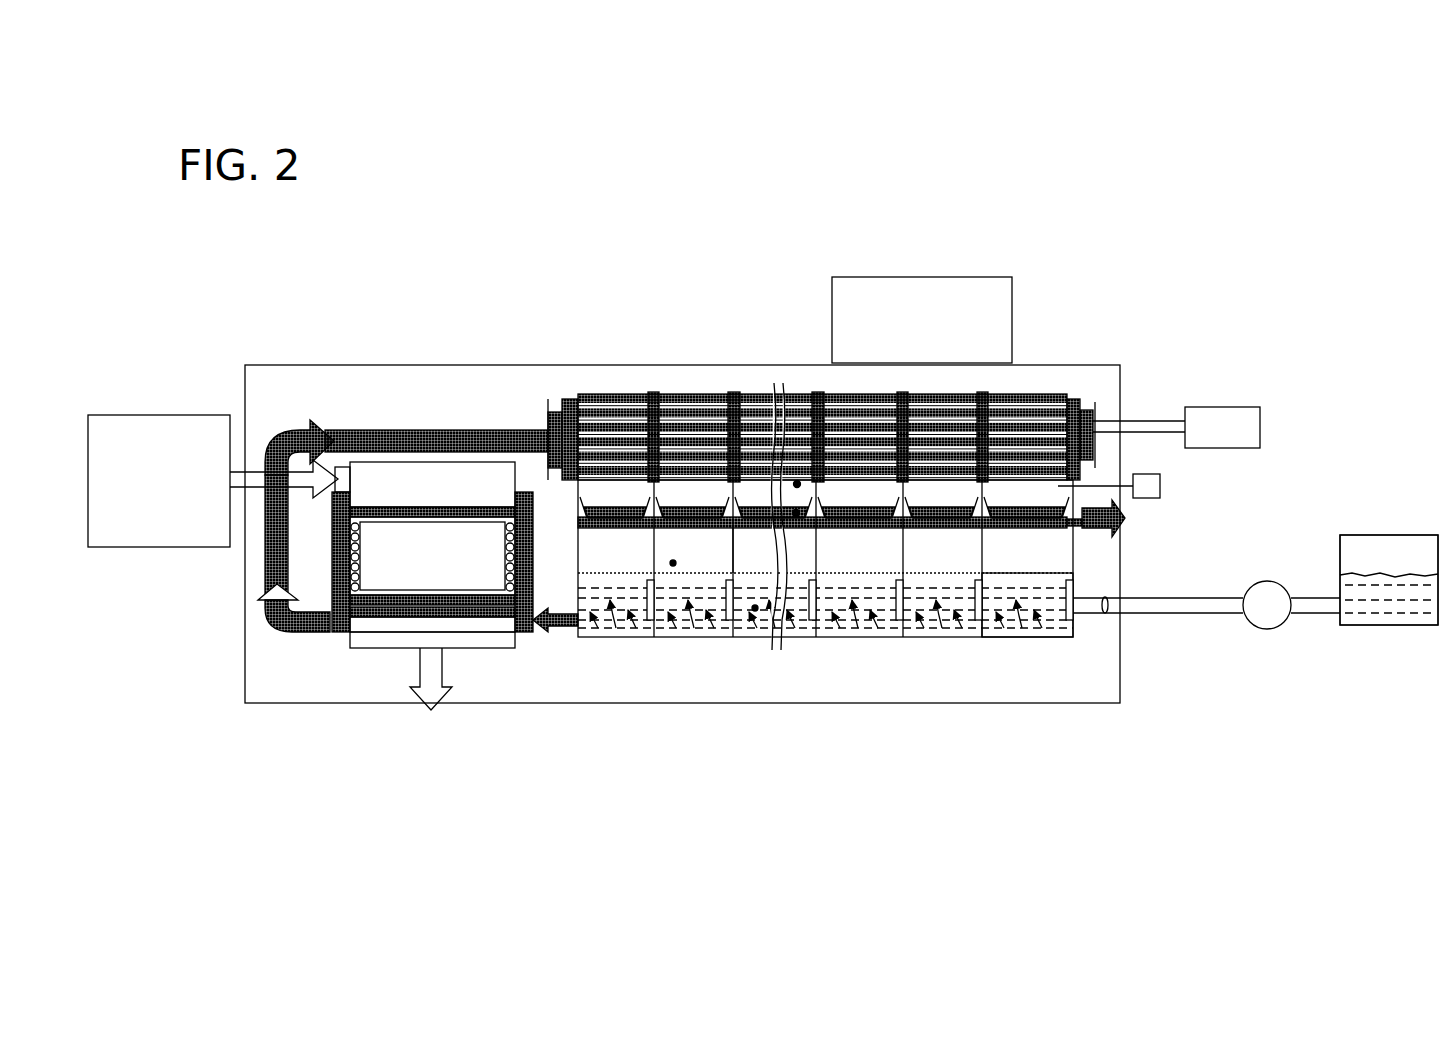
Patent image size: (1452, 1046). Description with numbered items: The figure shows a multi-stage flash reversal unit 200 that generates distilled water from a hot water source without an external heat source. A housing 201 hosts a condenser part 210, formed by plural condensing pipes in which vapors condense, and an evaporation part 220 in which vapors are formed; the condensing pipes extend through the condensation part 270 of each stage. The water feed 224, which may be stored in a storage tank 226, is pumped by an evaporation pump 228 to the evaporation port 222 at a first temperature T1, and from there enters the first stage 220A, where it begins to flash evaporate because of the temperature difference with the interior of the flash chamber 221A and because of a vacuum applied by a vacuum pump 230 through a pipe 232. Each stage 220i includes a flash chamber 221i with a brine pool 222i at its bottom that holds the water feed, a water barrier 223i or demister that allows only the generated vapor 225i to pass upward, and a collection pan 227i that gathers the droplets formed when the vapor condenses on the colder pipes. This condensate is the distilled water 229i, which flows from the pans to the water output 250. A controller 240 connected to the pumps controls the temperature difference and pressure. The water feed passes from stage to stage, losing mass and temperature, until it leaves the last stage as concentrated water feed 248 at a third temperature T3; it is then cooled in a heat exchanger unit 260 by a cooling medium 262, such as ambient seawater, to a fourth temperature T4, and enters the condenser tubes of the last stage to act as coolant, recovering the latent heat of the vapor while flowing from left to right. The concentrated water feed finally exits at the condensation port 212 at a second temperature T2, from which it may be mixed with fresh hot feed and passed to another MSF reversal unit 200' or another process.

The MSF reversal unit 200 is at (682, 457).
The another MSF reversal unit 200' is at (1204, 411).
The housing 201 is at (605, 392).
The condenser part 210 is at (690, 388).
The condensation port 212 is at (1093, 410).
The evaporation part 220 is at (818, 652).
The first stage 220A is at (1030, 640).
The stage 220i is at (757, 640).
The flash chamber 221A is at (1055, 553).
The flash chamber 221i is at (673, 566).
The evaporation port 222 is at (1090, 598).
The brine pool 222i is at (754, 611).
The water barrier 223i is at (737, 530).
The water feed 224 is at (1375, 628).
The vapor 225i is at (798, 481).
The storage tank 226 is at (1385, 535).
The collection pan 227i is at (743, 510).
The evaporation pump 228 is at (1268, 630).
The distilled water 229i is at (798, 516).
The vacuum pump 230 is at (1160, 486).
The pipe 232 is at (1102, 486).
The controller 240 is at (927, 277).
The concentrated water feed 248 is at (555, 588).
The water output 250 is at (1128, 518).
The heat exchanger unit 260 is at (455, 570).
The cooling medium 262 is at (180, 500).
The condensation part 270 is at (628, 388).
The first temperature T1 is at (1090, 615).
The second temperature T2 is at (1110, 420).
The third temperature T3 is at (553, 568).
The fourth temperature T4 is at (305, 633).